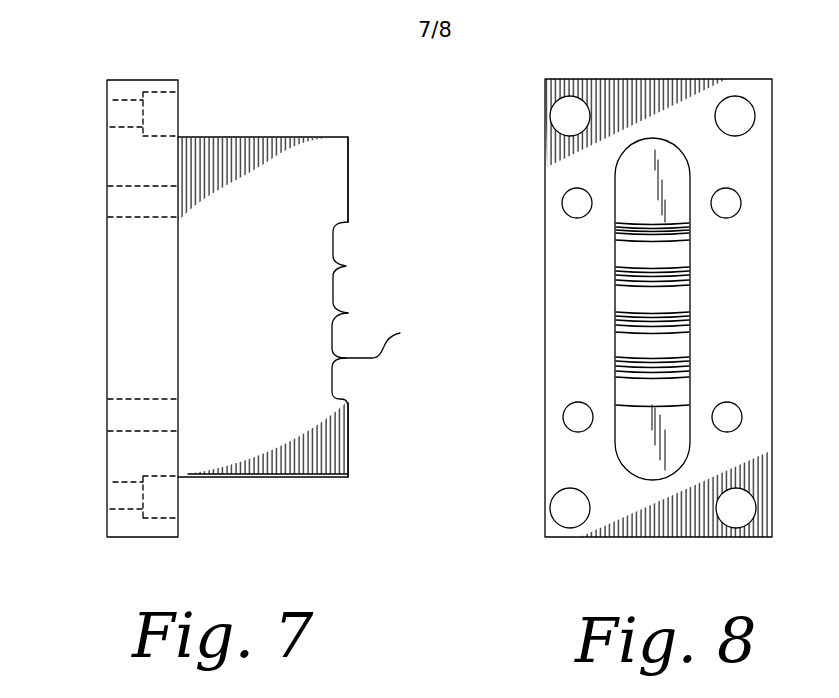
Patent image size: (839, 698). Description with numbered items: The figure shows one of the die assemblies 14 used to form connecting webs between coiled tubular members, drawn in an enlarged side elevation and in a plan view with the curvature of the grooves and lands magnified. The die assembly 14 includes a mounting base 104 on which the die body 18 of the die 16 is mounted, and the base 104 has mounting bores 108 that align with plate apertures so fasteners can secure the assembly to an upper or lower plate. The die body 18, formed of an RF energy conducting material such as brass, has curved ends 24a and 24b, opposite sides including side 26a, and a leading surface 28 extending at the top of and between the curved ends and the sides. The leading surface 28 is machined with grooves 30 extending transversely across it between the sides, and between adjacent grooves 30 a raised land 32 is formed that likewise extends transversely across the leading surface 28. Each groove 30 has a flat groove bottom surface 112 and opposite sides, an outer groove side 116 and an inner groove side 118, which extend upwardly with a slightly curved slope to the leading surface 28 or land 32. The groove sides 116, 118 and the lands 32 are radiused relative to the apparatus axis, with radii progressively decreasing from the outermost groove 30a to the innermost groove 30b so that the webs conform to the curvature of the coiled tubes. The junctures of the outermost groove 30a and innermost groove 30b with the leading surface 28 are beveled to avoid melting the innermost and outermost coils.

In FIG. 7, the die assembly 14 is at (271, 296).
In FIG. 7, the mounting base 104 is at (123, 346).
In FIG. 7, the mounting bore 108 is at (118, 100).
In FIG. 8, the mounting bore 108 is at (570, 107).
In FIG. 7, the die 16 is at (313, 137).
In FIG. 7, the die body 18 is at (290, 457).
In FIG. 7, the curved end 24a is at (220, 137).
In FIG. 8, the curved end 24a is at (653, 138).
In FIG. 7, the curved end 24b is at (253, 478).
In FIG. 8, the curved end 24b is at (648, 480).
In FIG. 7, the side 26a is at (313, 182).
In FIG. 7, the leading surface 28 is at (372, 449).
In FIG. 7, the grooves 30 is at (360, 291).
In FIG. 8, the outermost groove 30a is at (663, 391).
In FIG. 8, the innermost groove 30b is at (663, 248).
In FIG. 7, the raised land 32 is at (348, 313).
In FIG. 8, the raised land 32 is at (615, 358).
In FIG. 7, the groove bottom surface 112 is at (333, 365).
In FIG. 7, the outer groove side 116 is at (338, 398).
In FIG. 7, the inner groove side 118 is at (333, 380).